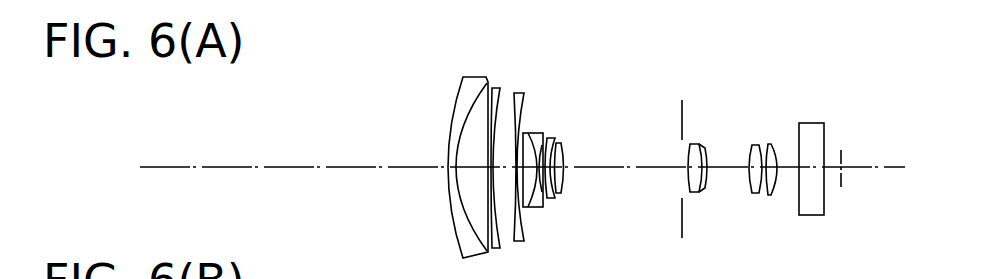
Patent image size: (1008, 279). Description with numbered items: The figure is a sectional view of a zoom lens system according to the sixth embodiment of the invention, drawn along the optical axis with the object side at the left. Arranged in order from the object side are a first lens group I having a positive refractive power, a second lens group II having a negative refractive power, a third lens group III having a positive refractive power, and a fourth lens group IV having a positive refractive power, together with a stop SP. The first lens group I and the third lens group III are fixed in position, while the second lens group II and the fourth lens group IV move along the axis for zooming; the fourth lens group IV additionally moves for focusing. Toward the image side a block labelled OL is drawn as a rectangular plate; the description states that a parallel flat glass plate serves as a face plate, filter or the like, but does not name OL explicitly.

The first lens group I is at (521, 28).
The second lens group II is at (565, 28).
The third lens group III is at (718, 33).
The fourth lens group IV is at (780, 33).
The stop SP is at (682, 224).
The optical low-pass filter / optical block OL is at (822, 123).